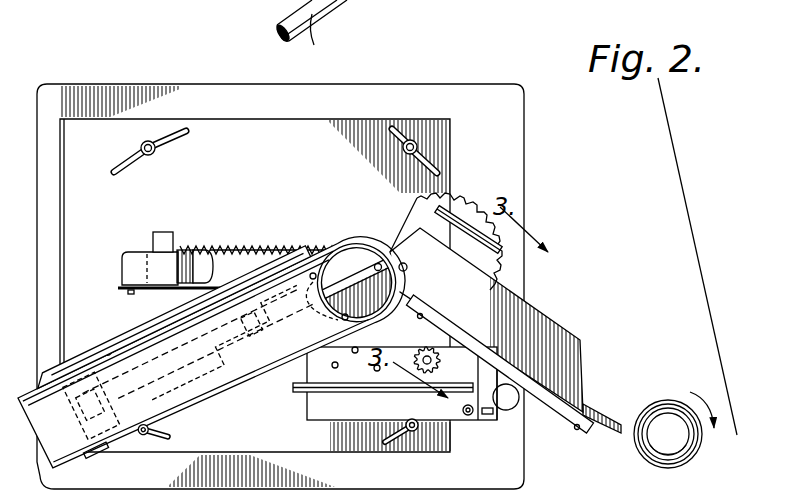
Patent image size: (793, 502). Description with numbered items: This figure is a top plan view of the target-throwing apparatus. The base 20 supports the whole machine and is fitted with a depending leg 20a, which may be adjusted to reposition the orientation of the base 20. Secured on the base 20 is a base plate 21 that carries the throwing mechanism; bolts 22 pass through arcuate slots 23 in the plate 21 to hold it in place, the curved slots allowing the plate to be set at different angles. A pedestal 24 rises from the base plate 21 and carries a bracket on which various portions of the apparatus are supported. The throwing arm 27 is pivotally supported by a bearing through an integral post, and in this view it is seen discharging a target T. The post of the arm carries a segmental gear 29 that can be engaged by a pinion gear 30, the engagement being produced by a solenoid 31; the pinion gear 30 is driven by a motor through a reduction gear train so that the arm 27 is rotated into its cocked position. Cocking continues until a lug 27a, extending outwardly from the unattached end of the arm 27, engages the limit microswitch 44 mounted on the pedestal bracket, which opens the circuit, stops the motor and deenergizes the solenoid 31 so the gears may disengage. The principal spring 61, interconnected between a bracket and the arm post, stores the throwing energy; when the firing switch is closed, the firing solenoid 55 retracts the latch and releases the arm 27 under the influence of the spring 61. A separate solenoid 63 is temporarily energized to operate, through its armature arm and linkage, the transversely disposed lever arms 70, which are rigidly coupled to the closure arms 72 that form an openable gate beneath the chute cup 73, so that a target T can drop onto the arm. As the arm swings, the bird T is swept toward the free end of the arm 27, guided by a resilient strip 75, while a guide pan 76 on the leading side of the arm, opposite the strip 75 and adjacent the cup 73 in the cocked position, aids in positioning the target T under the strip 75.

The base 20 is at (486, 100).
The depending leg 20a is at (327, 37).
The base plate 21 is at (447, 138).
The bolts 22 is at (150, 141).
The arcuate slots 23 is at (175, 128).
The pedestal 24 is at (329, 21).
The throwing arm 27 is at (568, 318).
The lug 27a is at (600, 406).
The segmental gear 29 is at (472, 212).
The pinion gear 30 is at (433, 373).
The solenoid 31 is at (497, 421).
The limit microswitch 44 is at (163, 236).
The firing solenoid 55 is at (207, 248).
The principal spring 61 is at (260, 249).
The solenoid 63 is at (223, 383).
The lever arms 70 is at (128, 352).
The closure arms 72 is at (137, 335).
The chute cup 73 is at (360, 242).
The resilient strip 75 is at (573, 436).
The guide pan 76 is at (456, 232).
The target T is at (660, 418).